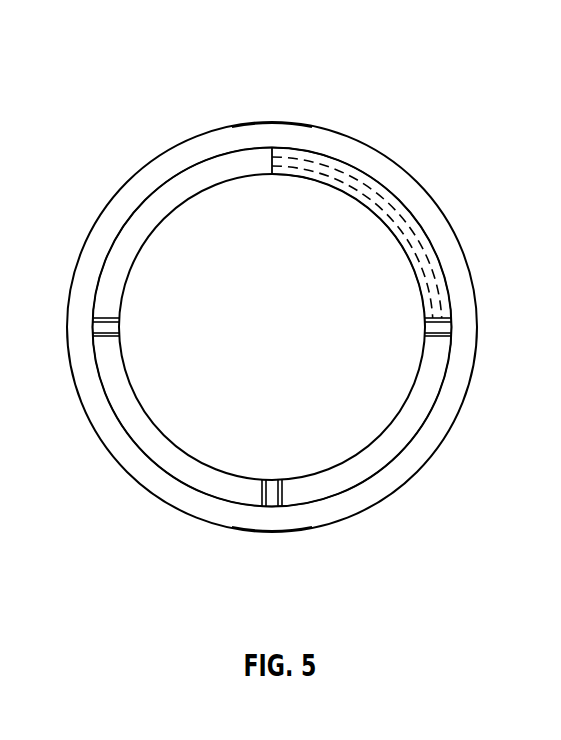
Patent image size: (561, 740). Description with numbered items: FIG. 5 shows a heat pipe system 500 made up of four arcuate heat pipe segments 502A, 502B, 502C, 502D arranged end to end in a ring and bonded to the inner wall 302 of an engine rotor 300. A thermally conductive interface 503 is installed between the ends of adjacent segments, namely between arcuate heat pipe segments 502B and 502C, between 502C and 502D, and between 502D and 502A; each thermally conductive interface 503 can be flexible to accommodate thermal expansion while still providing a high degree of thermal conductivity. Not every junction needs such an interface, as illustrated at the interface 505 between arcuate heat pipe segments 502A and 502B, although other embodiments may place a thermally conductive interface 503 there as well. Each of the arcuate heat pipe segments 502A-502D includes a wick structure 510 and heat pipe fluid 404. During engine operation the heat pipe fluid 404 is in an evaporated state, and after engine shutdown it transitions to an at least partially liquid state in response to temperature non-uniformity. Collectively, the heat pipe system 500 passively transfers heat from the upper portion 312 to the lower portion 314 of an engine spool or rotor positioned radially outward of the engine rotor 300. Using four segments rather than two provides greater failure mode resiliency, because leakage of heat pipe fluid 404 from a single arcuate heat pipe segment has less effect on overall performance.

The engine rotor 300 is at (400, 168).
The inner wall 302 is at (135, 205).
The upper portion 312 is at (272, 103).
The lower portion 314 is at (266, 545).
The heat pipe fluid 404 is at (117, 279).
The heat pipe system 500 is at (356, 232).
The arcuate heat pipe segment 502A is at (128, 250).
The arcuate heat pipe segment 502B is at (453, 258).
The arcuate heat pipe segment 502C is at (412, 422).
The arcuate heat pipe segment 502D is at (144, 440).
The thermally conductive interface 503 is at (103, 331).
The interface 505 is at (270, 160).
The wick structure 510 is at (326, 168).